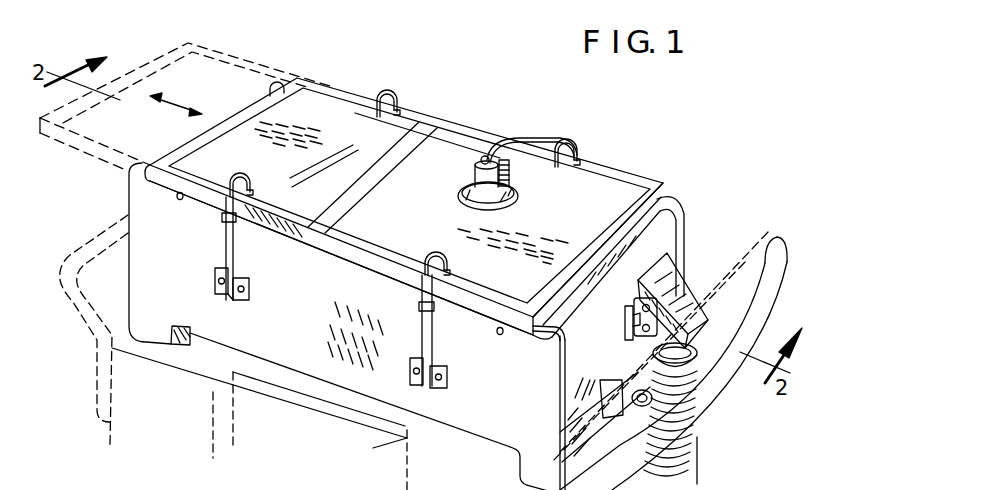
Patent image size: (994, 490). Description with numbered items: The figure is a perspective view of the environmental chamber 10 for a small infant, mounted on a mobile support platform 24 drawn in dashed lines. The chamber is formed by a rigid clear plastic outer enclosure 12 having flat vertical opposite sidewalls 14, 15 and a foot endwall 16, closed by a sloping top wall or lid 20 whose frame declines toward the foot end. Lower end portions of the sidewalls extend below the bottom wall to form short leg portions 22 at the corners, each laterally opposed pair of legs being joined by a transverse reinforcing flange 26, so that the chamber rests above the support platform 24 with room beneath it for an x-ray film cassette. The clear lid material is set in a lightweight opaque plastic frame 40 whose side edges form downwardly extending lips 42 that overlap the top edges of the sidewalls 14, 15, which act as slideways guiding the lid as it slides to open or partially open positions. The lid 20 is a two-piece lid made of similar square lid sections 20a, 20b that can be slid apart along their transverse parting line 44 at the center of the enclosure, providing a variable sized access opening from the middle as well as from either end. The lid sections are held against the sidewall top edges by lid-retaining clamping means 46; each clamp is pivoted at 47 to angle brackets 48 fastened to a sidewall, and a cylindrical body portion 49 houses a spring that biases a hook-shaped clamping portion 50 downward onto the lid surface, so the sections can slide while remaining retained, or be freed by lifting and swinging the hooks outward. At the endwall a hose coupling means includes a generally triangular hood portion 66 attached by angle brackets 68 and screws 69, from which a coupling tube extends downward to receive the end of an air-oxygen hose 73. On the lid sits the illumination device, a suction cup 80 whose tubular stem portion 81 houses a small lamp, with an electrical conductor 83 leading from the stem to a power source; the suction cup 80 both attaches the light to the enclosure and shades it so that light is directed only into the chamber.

The environmental chamber 10 is at (272, 327).
The outer enclosure 12 is at (330, 399).
The sidewall 14 is at (322, 326).
The sidewall 15 is at (690, 208).
The foot endwall 16 is at (668, 234).
The lid 20 is at (228, 56).
The lid section 20a is at (412, 130).
The lid section 20b is at (483, 147).
The leg portions 22 is at (112, 346).
The support platform 24 is at (378, 450).
The transverse reinforcing flange 26 is at (186, 340).
The frame 40 is at (246, 104).
The lips 42 is at (672, 185).
The transverse parting line 44 is at (386, 178).
The lid-retaining clamping means 46 is at (222, 240).
The pivot 47 is at (237, 299).
The angle brackets 48 is at (245, 286).
The cylindrical body portion 49 is at (222, 259).
The hook-shaped clamping portion 50 is at (228, 183).
The hood portion 66 is at (681, 289).
The angle brackets 68 is at (633, 308).
The screws 69 is at (628, 333).
The air-oxygen hose 73 is at (700, 422).
The suction cup 80 is at (517, 188).
The tubular stem portion 81 is at (482, 158).
The electrical conductor 83 is at (548, 136).